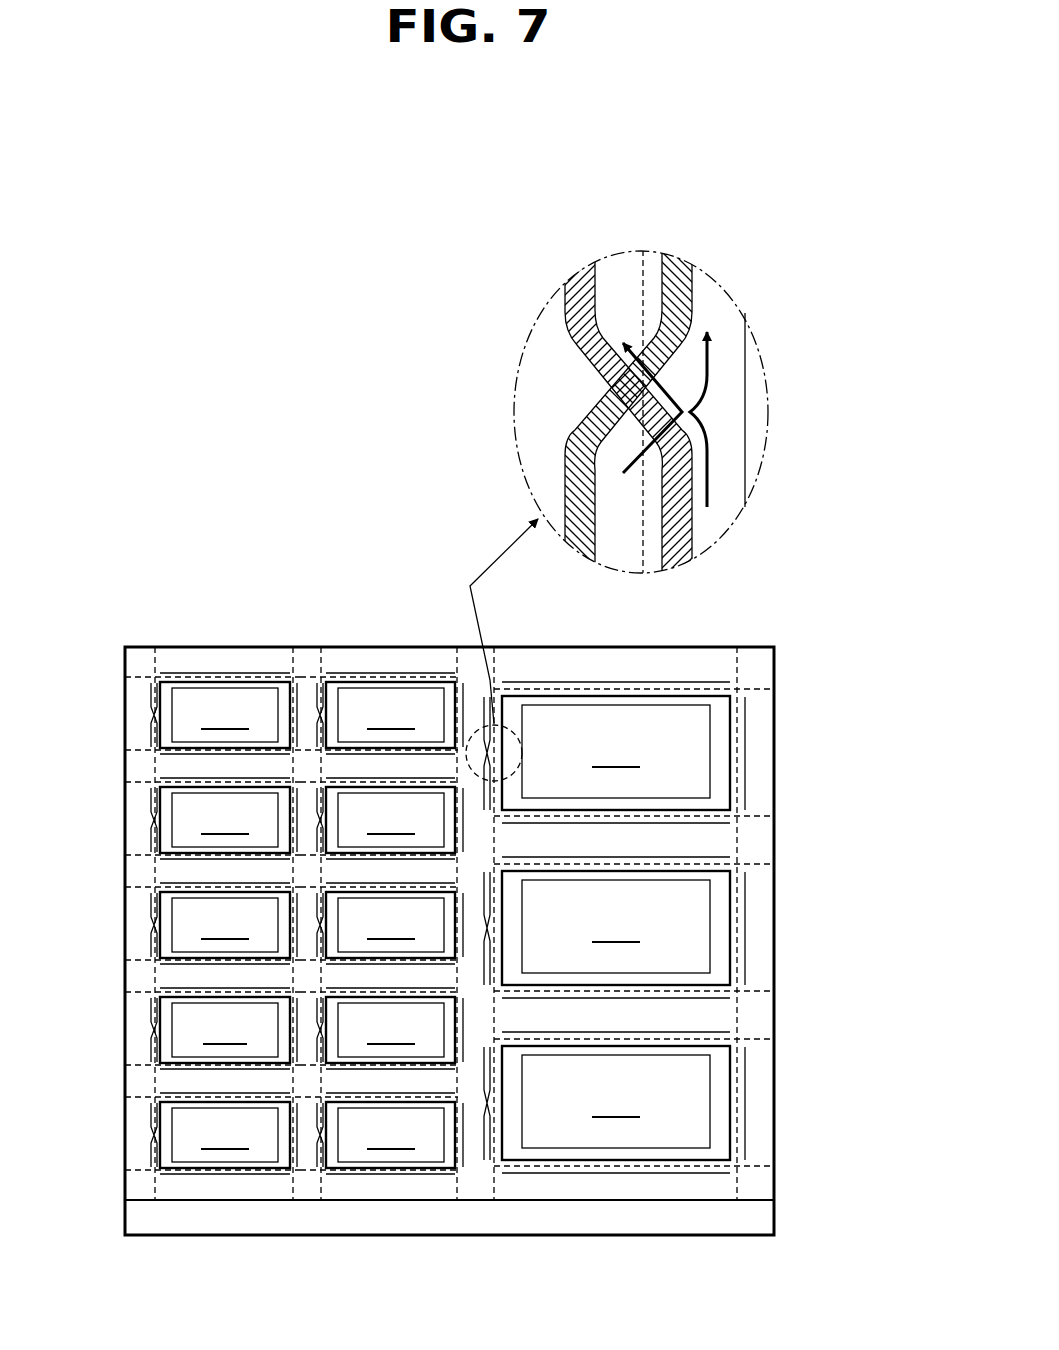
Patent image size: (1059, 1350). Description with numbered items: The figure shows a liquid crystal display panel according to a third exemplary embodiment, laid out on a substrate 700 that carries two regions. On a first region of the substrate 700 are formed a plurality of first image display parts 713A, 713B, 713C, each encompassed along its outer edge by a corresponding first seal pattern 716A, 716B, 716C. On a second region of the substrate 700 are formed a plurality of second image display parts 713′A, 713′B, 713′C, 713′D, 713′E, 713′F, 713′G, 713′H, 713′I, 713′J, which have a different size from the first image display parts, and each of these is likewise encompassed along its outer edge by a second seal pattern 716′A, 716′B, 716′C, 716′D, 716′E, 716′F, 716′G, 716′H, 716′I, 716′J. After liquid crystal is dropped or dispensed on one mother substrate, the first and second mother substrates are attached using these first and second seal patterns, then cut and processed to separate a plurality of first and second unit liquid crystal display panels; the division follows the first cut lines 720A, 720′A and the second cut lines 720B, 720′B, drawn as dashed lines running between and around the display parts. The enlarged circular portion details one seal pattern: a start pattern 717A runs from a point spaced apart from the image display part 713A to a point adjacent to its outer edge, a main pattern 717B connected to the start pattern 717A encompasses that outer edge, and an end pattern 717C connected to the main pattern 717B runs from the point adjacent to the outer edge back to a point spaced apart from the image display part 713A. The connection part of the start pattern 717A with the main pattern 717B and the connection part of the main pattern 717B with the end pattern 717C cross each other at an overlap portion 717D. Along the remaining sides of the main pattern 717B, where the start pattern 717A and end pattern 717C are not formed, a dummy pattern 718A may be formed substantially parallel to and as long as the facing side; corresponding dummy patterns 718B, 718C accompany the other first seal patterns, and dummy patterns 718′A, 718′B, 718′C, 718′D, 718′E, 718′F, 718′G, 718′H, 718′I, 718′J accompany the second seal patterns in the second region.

The substrate 700 is at (755, 1220).
The first image display part 713A is at (760, 411).
The first image display part 713B is at (616, 928).
The first image display part 713C is at (616, 1103).
The second image display part 713′A is at (390, 715).
The second image display part 713′B is at (390, 820).
The second image display part 713′C is at (390, 925).
The second image display part 713′D is at (390, 1030).
The second image display part 713′E is at (390, 1135).
The second image display part 713′F is at (225, 715).
The second image display part 713′G is at (225, 820).
The second image display part 713′H is at (225, 925).
The second image display part 713′I is at (225, 1030).
The second image display part 713′J is at (225, 1135).
The first seal pattern 716A is at (729, 780).
The first seal pattern 716B is at (729, 957).
The first seal pattern 716C is at (729, 1132).
The second seal pattern 716′A is at (320, 700).
The second seal pattern 716′B is at (316, 797).
The second seal pattern 716′C is at (316, 938).
The second seal pattern 716′D is at (316, 1045).
The second seal pattern 716′E is at (323, 1160).
The second seal pattern 716′F is at (150, 704).
The second seal pattern 716′G is at (150, 832).
The second seal pattern 716′H is at (150, 914).
The second seal pattern 716′I is at (150, 1020).
The second seal pattern 716′J is at (150, 1150).
The start pattern 717A is at (572, 498).
The main pattern 717B is at (675, 263).
The end pattern 717C is at (572, 307).
The overlap portion 717D is at (633, 402).
The dummy pattern 718A is at (746, 737).
The gate line 718B is at (746, 911).
The gate line 718C is at (746, 1087).
The gate line 718′A is at (373, 673).
The gate line 718′B is at (345, 777).
The gate line 718′C is at (353, 963).
The gate line 718′D is at (345, 1069).
The gate line 718′E is at (350, 1178).
The gate line 718′F is at (172, 676).
The gate line 718′G is at (176, 868).
The gate line 718′H is at (172, 887).
The gate line 718′I is at (172, 993).
The gate line 718′J is at (162, 1175).
The first cut line 720A is at (745, 690).
The second cut line 720B is at (728, 662).
The first cut line 720′A is at (211, 675).
The second cut line 720′B is at (158, 663).